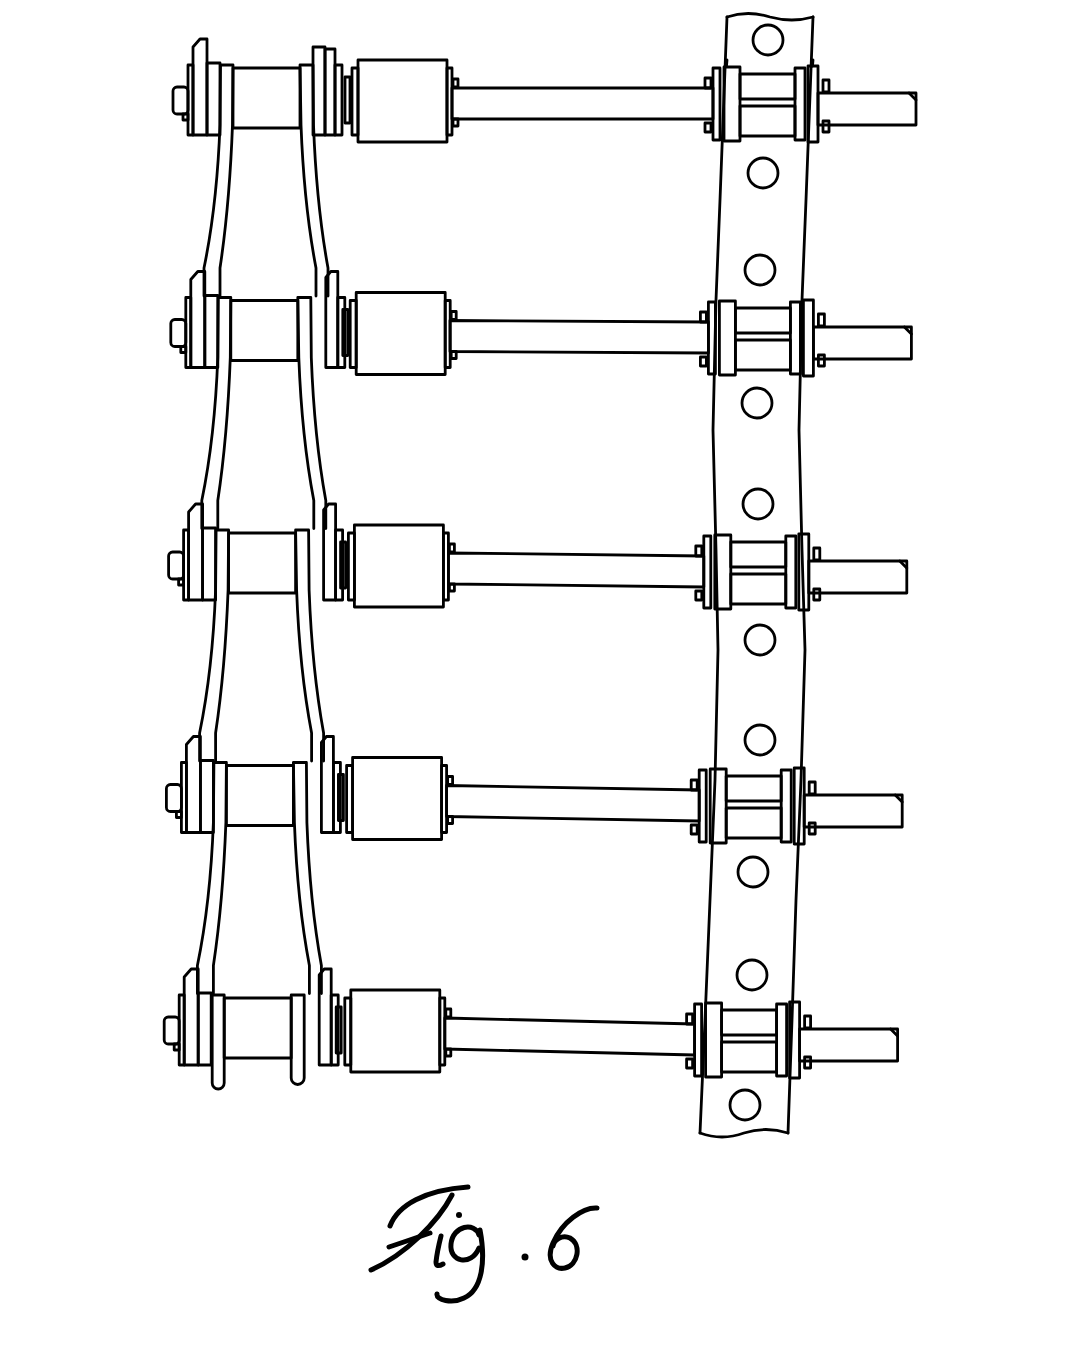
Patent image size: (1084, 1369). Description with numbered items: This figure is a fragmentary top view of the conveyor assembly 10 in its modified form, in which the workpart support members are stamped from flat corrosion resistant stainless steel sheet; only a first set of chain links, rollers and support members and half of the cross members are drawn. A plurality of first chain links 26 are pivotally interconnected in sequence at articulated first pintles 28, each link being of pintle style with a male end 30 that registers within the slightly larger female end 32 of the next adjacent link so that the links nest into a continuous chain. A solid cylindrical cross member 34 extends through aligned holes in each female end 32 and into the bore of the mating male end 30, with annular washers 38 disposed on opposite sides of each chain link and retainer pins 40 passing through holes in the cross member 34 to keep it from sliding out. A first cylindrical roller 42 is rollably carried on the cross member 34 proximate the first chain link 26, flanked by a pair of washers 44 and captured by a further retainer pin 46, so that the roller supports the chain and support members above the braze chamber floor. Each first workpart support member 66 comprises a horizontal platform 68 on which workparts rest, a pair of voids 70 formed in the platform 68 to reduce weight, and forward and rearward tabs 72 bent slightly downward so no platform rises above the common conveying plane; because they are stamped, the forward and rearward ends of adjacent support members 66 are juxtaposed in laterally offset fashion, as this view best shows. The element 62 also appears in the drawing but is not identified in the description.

The conveyor assembly 10 is at (192, 241).
The first chain links 26 is at (317, 208).
The first pintles 28 is at (172, 96).
The male end 30 is at (228, 66).
The female end 32 is at (333, 47).
The cross member 34 is at (878, 120).
The annular washers 38 is at (187, 133).
The retainer pins 40 is at (186, 77).
The first cylindrical roller 42 is at (415, 135).
The washers 44 is at (457, 79).
The retainer pin 46 is at (460, 125).
The flange coupling 62 is at (713, 82).
The first workpart support member 66 is at (812, 40).
The platform 68 is at (735, 36).
The voids 70 is at (749, 175).
The tabs 72 is at (726, 118).